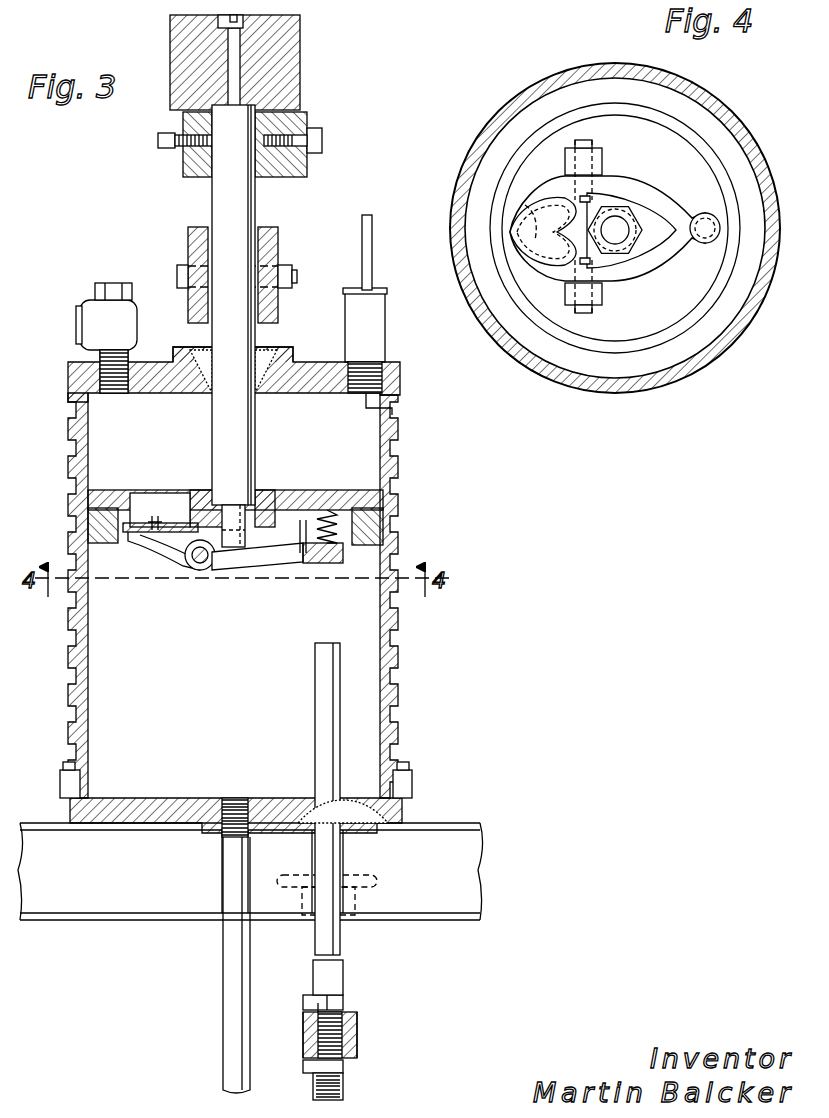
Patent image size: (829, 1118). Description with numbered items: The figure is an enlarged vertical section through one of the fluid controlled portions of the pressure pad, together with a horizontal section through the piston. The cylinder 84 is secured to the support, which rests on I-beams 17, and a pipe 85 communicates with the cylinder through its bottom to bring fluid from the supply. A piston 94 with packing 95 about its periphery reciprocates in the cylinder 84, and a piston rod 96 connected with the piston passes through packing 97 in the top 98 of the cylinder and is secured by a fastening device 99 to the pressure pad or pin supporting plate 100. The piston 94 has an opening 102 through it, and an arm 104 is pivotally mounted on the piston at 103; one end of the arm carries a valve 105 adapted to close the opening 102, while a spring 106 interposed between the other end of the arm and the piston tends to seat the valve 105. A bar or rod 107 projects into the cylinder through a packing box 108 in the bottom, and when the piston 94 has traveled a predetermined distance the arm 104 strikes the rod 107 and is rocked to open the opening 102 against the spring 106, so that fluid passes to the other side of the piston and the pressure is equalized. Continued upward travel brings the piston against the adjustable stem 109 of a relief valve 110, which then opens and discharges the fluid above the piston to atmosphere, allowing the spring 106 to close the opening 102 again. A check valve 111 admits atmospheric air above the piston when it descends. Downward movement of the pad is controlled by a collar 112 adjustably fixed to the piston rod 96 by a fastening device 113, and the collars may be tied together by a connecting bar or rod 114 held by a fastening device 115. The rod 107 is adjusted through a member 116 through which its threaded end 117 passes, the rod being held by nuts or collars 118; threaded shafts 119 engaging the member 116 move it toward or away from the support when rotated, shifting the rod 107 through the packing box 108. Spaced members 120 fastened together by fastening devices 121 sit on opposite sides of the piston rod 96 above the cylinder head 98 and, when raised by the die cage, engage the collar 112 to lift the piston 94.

In FIG. 3, the I-beams 17 is at (470, 845).
In FIG. 3, the cylinder 84 is at (398, 672).
In FIG. 4, the cylinder 84 is at (640, 390).
In FIG. 3, the pipe 85 is at (236, 940).
In FIG. 3, the piston 94 is at (355, 490).
In FIG. 4, the piston 94 is at (700, 290).
In FIG. 3, the packing 95 is at (395, 528).
In FIG. 3, the piston rod 96 is at (225, 421).
In FIG. 4, the piston rod 96 is at (625, 245).
In FIG. 3, the packing 97 is at (285, 356).
In FIG. 3, the top of the cylinder 98 is at (300, 386).
In FIG. 3, the fastening device 99 is at (240, 58).
In FIG. 3, the pressure pad or pin supporting plate 100 is at (300, 95).
In FIG. 3, the opening 102 is at (152, 498).
In FIG. 4, the opening 102 is at (510, 205).
In FIG. 3, the pivot 103 is at (202, 565).
In FIG. 4, the pivot 103 is at (590, 148).
In FIG. 3, the arm 104 is at (252, 560).
In FIG. 4, the arm 104 is at (650, 196).
In FIG. 3, the valve 105 is at (145, 545).
In FIG. 4, the valve 105 is at (520, 233).
In FIG. 3, the spring 106 is at (305, 563).
In FIG. 4, the spring 106 is at (705, 218).
In FIG. 3, the bar or rod 107 is at (330, 735).
In FIG. 3, the packing box 108 is at (350, 800).
In FIG. 3, the adjustable stem 109 is at (392, 412).
In FIG. 3, the relief valve 110 is at (385, 322).
In FIG. 3, the check valve 111 is at (130, 318).
In FIG. 3, the collar 112 is at (200, 178).
In FIG. 3, the fastening device 113 is at (168, 148).
In FIG. 3, the connecting bar or rod 114 is at (295, 178).
In FIG. 3, the fastening device 115 is at (322, 142).
In FIG. 3, the member 116 is at (358, 1028).
In FIG. 3, the threaded end 117 is at (303, 1040).
In FIG. 3, the nuts or collars 118 is at (347, 1000).
In FIG. 3, the threaded shafts 119 is at (362, 878).
In FIG. 3, the spaced members 120 is at (190, 242).
In FIG. 3, the fastening devices 121 is at (296, 277).